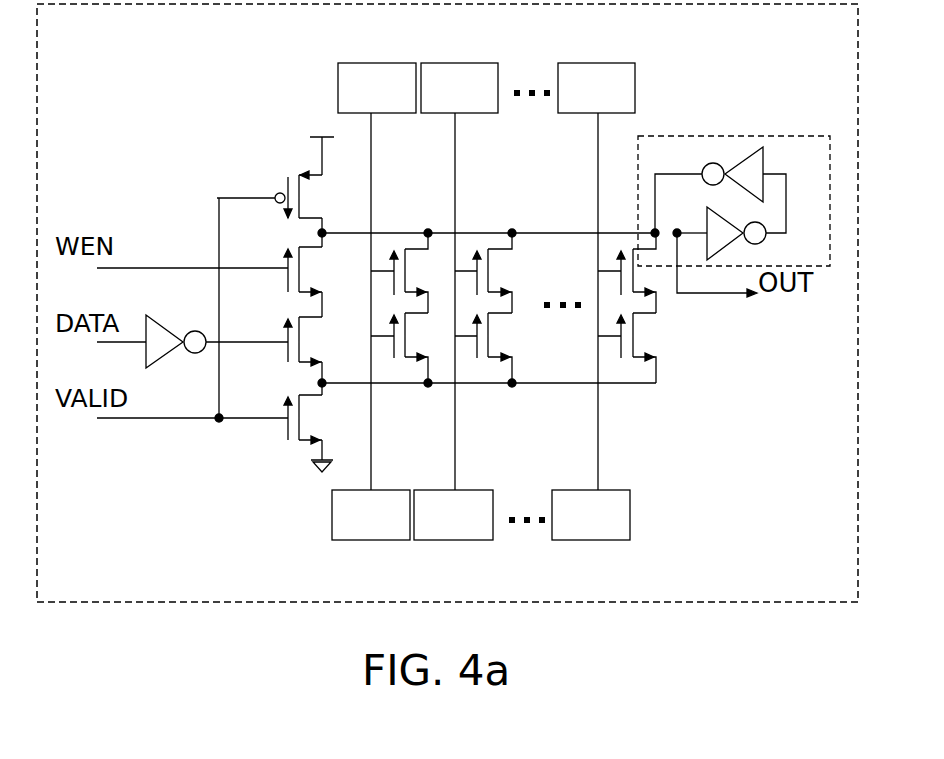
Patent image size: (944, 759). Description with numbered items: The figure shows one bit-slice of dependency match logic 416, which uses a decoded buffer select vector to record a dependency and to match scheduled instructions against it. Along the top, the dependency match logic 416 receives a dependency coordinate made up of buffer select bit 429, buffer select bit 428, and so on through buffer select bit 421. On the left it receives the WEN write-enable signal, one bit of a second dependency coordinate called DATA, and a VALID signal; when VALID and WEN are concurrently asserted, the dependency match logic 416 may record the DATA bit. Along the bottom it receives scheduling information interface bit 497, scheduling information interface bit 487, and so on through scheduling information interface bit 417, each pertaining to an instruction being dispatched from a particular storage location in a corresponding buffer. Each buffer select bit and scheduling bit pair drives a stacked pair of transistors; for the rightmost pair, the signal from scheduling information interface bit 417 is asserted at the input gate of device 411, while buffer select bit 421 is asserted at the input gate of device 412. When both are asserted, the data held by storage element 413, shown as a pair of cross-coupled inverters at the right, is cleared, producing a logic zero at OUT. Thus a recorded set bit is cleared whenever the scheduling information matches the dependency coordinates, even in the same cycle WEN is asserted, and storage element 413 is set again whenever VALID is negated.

The device 411 is at (645, 308).
The device 412 is at (637, 283).
The storage element 413 is at (670, 164).
The dependency match logic 416 is at (447, 303).
The scheduling information interface bit 417 is at (591, 515).
The buffer select bit 421 is at (596, 276).
The buffer select bit 428 is at (459, 276).
The buffer select bit 429 is at (377, 276).
The scheduling information interface bit 487 is at (453, 515).
The scheduling information interface bit 497 is at (371, 515).